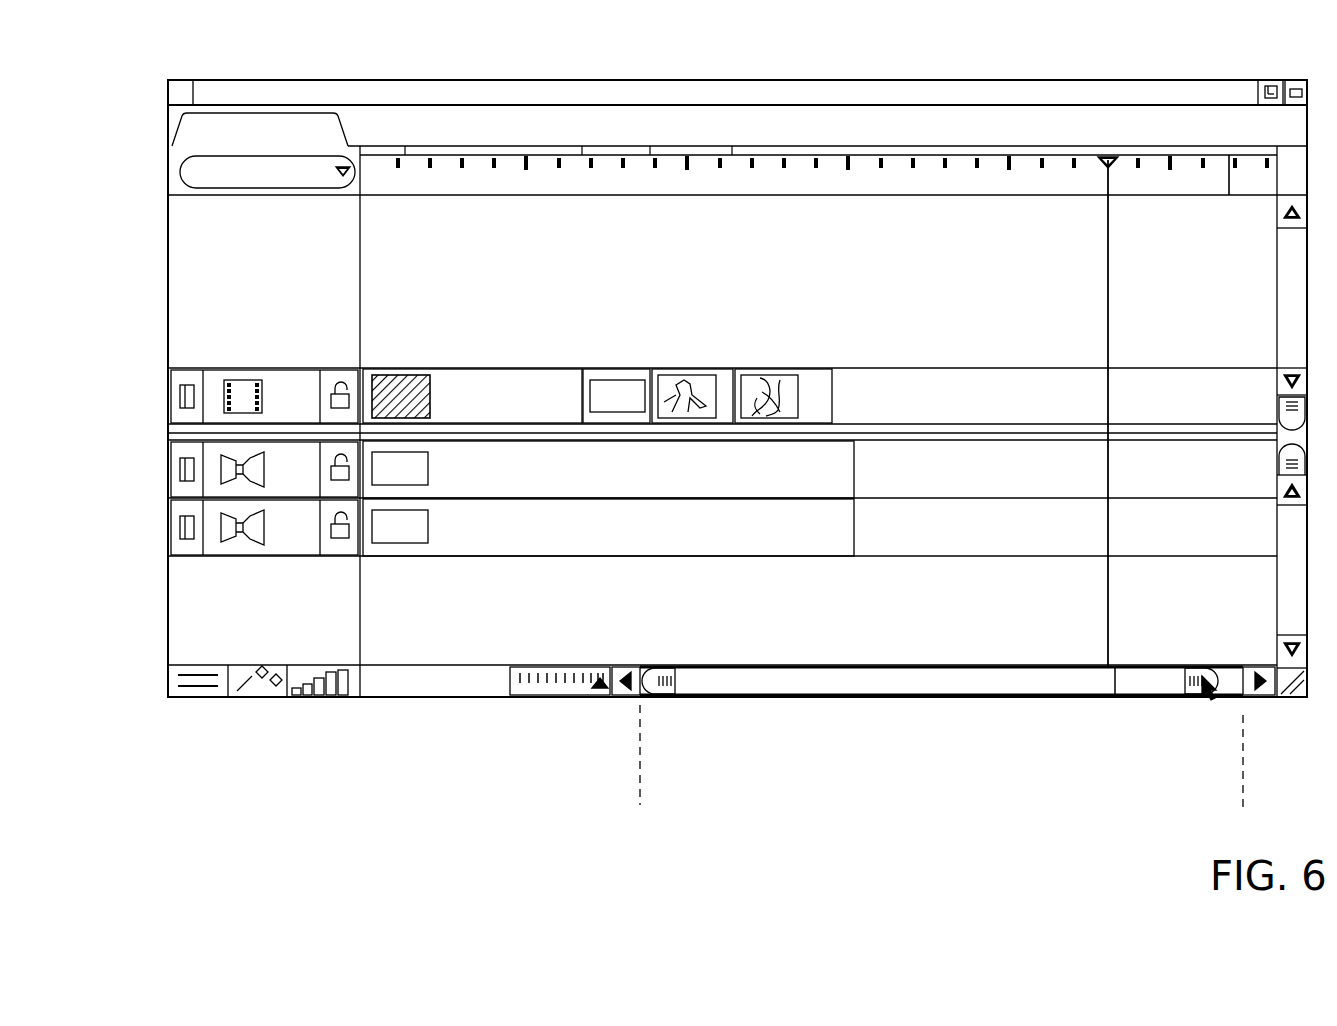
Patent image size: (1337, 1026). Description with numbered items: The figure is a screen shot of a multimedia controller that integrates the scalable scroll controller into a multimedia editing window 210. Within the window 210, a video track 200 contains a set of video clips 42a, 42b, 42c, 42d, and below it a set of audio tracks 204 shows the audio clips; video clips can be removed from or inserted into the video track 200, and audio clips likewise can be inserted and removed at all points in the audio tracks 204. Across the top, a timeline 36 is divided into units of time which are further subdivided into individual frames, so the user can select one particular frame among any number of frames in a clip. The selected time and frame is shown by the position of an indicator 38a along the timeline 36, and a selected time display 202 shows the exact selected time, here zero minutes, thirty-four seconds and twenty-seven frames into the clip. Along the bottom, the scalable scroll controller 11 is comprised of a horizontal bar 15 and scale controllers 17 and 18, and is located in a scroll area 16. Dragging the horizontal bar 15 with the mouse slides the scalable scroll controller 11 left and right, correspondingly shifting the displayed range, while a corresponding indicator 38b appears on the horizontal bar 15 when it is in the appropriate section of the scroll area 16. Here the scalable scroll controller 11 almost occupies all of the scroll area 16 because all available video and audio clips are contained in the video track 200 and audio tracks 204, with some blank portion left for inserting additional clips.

The window 210 is at (1240, 82).
The timeline 36 is at (633, 196).
The indicator 38a is at (1109, 262).
The video clip 42a is at (398, 366).
The video clip 42b is at (613, 366).
The video clip 42c is at (686, 366).
The video clip 42d is at (768, 366).
The video track 200 is at (890, 360).
The audio tracks 204 is at (835, 578).
The selected time display 202 is at (505, 708).
The horizontal bar 15 is at (955, 686).
The corresponding indicator 38b is at (1114, 690).
The scale controller 17 is at (660, 697).
The scale controller 18 is at (1195, 697).
The scalable scroll controller 11 is at (1218, 708).
The scroll area 16 is at (626, 802).